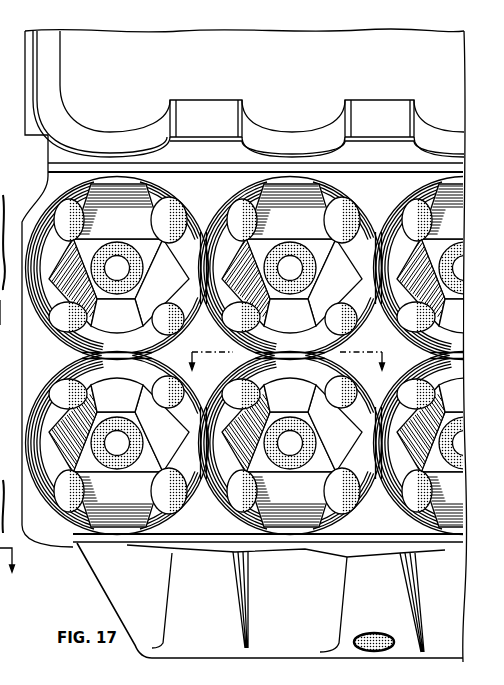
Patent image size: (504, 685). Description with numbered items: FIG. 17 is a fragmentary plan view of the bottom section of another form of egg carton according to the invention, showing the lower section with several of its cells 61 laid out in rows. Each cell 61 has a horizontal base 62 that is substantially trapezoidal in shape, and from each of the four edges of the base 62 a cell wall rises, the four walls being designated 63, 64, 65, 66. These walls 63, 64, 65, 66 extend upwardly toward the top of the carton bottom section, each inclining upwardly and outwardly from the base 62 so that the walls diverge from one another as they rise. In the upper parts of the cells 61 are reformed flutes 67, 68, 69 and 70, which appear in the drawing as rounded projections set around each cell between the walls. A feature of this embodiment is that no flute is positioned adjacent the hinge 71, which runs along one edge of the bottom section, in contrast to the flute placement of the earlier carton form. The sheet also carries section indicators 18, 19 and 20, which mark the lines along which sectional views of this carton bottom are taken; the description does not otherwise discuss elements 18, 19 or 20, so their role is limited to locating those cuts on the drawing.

The section line 18- 18 is at (3, 312).
The section line 19- 19 is at (291, 351).
The section line 20- 20 is at (12, 577).
The cell 61 is at (400, 252).
The cell base 62 is at (158, 250).
The cell wall 63 is at (342, 288).
The cell wall 64 is at (309, 226).
The cell wall 65 is at (262, 251).
The cell wall 66 is at (296, 319).
The reformed flute 67 is at (335, 326).
The reformed flute 68 is at (340, 208).
The reformed flute 69 is at (240, 213).
The reformed flute 70 is at (235, 309).
The hinge 71 is at (48, 164).